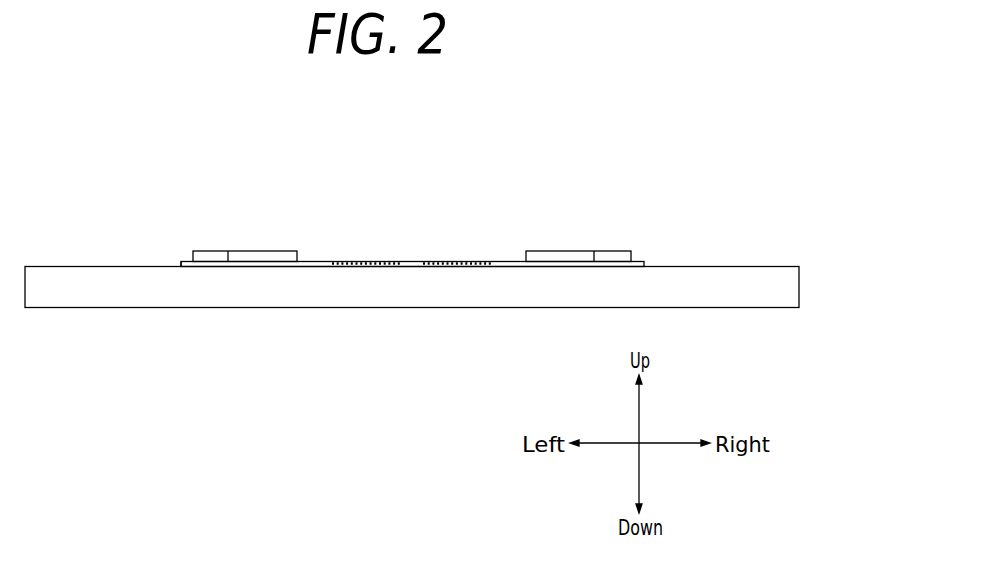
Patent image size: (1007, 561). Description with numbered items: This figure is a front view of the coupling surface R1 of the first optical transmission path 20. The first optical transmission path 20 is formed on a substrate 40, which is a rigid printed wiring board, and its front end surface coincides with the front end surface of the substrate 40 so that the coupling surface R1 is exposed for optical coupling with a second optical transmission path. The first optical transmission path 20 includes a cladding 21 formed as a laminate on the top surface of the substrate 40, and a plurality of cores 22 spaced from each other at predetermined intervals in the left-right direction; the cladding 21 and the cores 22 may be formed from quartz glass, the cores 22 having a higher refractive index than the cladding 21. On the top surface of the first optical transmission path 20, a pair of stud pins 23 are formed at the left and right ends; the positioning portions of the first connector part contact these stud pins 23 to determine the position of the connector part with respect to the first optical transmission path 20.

The first optical transmission path 20 is at (688, 164).
The substrate 40 is at (390, 296).
The cladding 21 is at (637, 261).
The coupling surface R1 is at (179, 264).
The stud pins 23 is at (265, 255).
The cores 22 is at (330, 261).